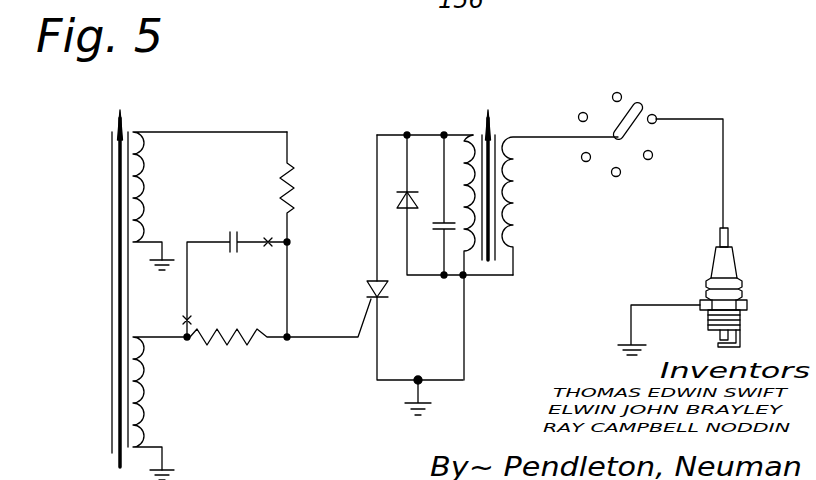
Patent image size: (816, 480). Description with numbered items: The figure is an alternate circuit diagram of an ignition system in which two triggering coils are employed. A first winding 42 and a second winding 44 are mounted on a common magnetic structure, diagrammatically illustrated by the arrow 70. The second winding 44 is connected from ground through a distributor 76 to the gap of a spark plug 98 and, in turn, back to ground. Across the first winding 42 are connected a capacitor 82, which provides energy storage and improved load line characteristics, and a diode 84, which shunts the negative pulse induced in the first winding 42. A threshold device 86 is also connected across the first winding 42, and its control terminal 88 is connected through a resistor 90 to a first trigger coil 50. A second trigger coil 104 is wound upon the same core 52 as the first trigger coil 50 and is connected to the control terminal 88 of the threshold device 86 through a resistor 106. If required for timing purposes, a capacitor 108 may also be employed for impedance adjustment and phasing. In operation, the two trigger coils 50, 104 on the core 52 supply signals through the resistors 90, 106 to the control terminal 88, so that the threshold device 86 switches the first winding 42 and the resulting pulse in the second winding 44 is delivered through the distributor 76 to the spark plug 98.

The core 52 is at (112, 125).
The first trigger coil 50 is at (146, 182).
The second trigger coil 104 is at (147, 426).
The resistor 106 is at (236, 346).
The capacitor 108 is at (232, 232).
The resistor 90 is at (292, 205).
The control terminal 88 is at (364, 322).
The threshold device 86 is at (386, 300).
The diode 84 is at (397, 205).
The capacitor 82 is at (433, 226).
The first winding 42 is at (467, 140).
The arrow 70 is at (491, 113).
The second winding 44 is at (513, 212).
The distributor 76 is at (634, 99).
The spark plug 98 is at (736, 268).